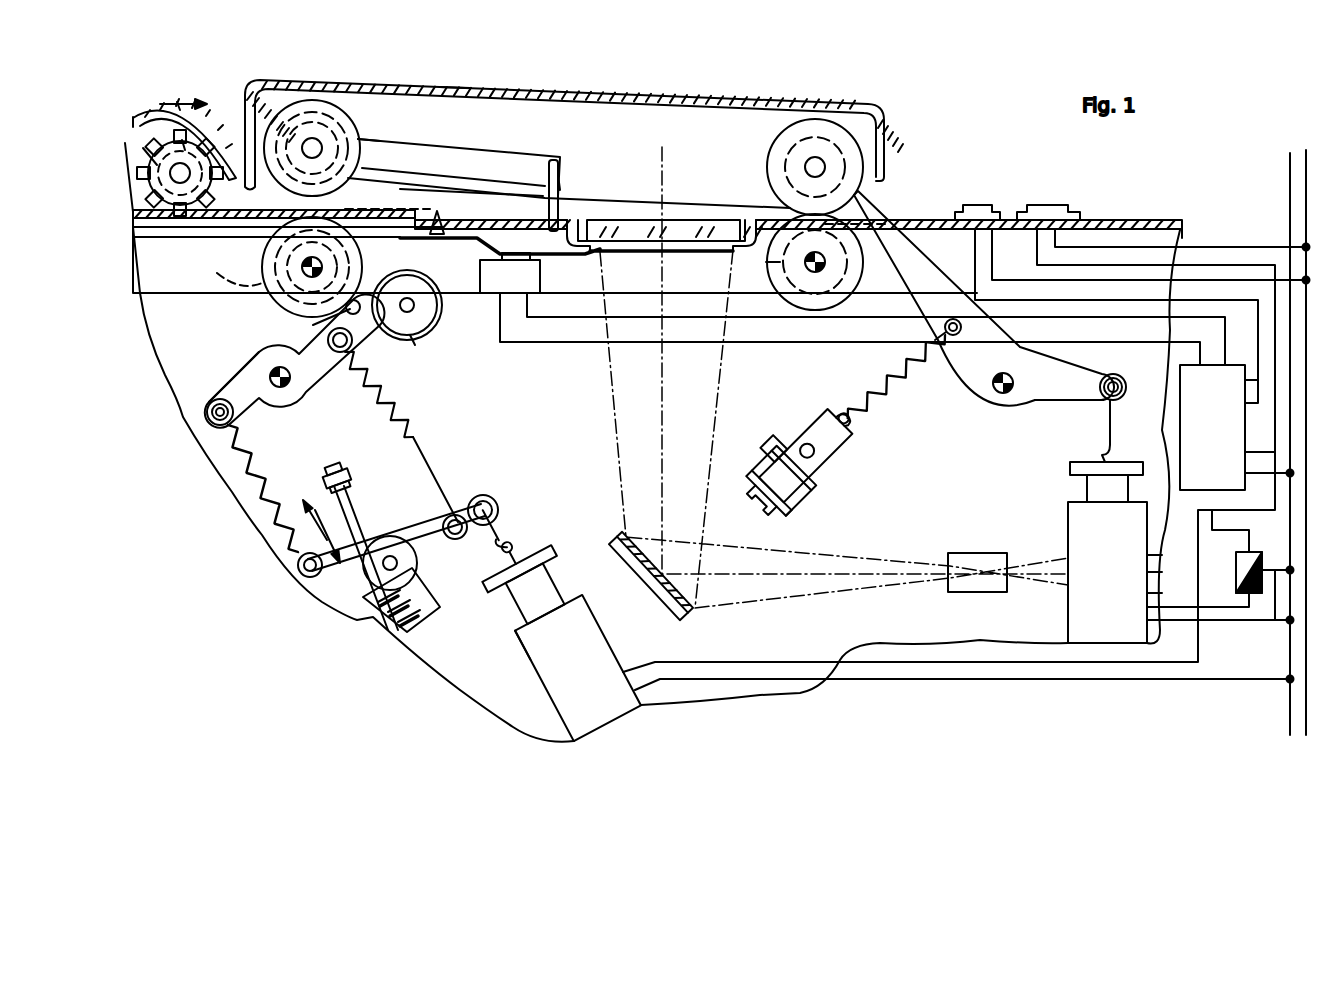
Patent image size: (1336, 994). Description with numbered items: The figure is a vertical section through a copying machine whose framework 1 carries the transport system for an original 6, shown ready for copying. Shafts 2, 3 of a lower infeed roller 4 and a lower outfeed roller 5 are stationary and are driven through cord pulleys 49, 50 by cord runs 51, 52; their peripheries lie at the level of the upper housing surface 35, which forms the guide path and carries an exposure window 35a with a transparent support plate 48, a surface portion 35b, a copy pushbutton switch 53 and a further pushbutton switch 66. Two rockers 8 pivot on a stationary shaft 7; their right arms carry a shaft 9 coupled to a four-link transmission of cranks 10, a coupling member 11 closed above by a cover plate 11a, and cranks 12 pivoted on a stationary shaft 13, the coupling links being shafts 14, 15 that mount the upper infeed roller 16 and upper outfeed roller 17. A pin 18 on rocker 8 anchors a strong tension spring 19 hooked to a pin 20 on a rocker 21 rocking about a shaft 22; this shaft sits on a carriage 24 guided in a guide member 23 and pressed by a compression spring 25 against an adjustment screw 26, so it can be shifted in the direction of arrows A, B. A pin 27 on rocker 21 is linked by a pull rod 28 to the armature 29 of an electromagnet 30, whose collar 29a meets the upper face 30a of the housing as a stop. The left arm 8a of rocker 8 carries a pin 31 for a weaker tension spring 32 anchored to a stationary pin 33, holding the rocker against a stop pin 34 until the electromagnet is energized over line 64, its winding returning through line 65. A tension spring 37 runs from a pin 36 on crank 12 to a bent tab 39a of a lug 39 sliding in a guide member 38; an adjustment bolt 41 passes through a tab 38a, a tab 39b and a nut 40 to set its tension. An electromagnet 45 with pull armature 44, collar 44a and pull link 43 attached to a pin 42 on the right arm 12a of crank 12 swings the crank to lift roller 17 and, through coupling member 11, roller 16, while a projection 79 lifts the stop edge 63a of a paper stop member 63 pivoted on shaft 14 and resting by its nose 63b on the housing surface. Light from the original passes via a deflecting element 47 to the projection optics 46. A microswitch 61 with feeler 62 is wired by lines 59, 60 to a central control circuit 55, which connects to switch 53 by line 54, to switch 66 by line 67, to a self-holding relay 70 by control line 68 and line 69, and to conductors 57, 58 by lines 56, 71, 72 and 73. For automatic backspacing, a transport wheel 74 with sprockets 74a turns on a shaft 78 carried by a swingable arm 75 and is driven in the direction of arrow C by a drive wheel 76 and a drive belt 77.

The framework 1 is at (155, 335).
The shaft 2 is at (330, 267).
The shaft 3 is at (815, 275).
The lower infeed roller 4 is at (265, 266).
The lower outfeed roller 5 is at (863, 264).
The original 6 is at (133, 226).
The stationary shaft 7 is at (272, 372).
The rocker 8 is at (318, 370).
The left arm of rocker 8a is at (245, 385).
The shaft 9 is at (415, 335).
The crank 10 is at (410, 275).
The coupling member 11 is at (583, 106).
The cover plate 11a is at (455, 92).
The crank 12 is at (925, 285).
The lever arm 12a is at (1060, 380).
The stationary shaft 13 is at (995, 392).
The shaft 14 is at (322, 148).
The shaft 15 is at (818, 157).
The upper infeed roller 16 is at (345, 122).
The upper outfeed roller 17 is at (768, 123).
The pin 18 is at (350, 343).
The tension spring 19 is at (405, 423).
The pin 20 is at (452, 520).
The rocker 21 is at (420, 540).
The shaft 22 is at (410, 563).
The guide member 23 is at (430, 595).
The carriage 24 is at (360, 500).
The compression spring 25 is at (390, 615).
The adjustment screw 26 is at (333, 470).
The pin 27 is at (483, 497).
The pull rod 28 is at (500, 555).
The armature 29 is at (548, 595).
The collar 29a is at (548, 570).
The electromagnet 30 is at (608, 660).
The upper face of housing 30a is at (515, 632).
The pin 31 is at (205, 412).
The tension spring 32 is at (255, 470).
The stationary pin 33 is at (300, 567).
The stop pin 34 is at (313, 325).
The upper housing surface 35 is at (908, 220).
The exposure window 35a is at (610, 220).
The guide strip 35b is at (487, 200).
The pin 36 is at (945, 328).
The tension spring 37 is at (905, 362).
The guide member 38 is at (816, 481).
The bent tab 38a is at (814, 519).
The lug 39 is at (794, 444).
The bent tab 39a is at (878, 408).
The bent tab 39b is at (742, 451).
The nut 40 is at (840, 451).
The adjustment bolt 41 is at (740, 497).
The pivot pin 42 is at (1118, 375).
The pull link 43 is at (1108, 416).
The pull armature 44 is at (1085, 490).
The collar 44a is at (1078, 470).
The electromagnet 45 is at (1080, 548).
The projection optics 46 is at (960, 560).
The mirror 47 is at (660, 595).
The transparent support plate 48 is at (705, 224).
The cord pulley 49 is at (235, 282).
The cord pulley 50 is at (766, 266).
The cord run 51 is at (578, 292).
The cord run 52 is at (160, 297).
The copy pushbutton switch 53 is at (976, 205).
The line 54 is at (1252, 312).
The central control circuit 55 is at (1180, 418).
The line 56 is at (1245, 262).
The conductor 57 is at (1306, 187).
The conductor 58 is at (1290, 165).
The line 59 is at (548, 342).
The line 60 is at (537, 318).
The microswitch 61 is at (483, 300).
The feeler 62 is at (443, 195).
The paper stop member 63 is at (458, 157).
The stop edge 63a is at (556, 180).
The nose 63b is at (385, 150).
The line 64 is at (1222, 662).
The line 65 is at (1285, 678).
The pushbutton switch 66 is at (1046, 207).
The line 67 is at (1265, 246).
The control line 68 is at (1237, 552).
The line 69 is at (1205, 530).
The self-holding relay 70 is at (1249, 608).
The line 71 is at (1182, 230).
The line 72 is at (1272, 585).
The line 73 is at (1246, 473).
The transport wheel 74 is at (143, 147).
The sprockets 74a is at (177, 102).
The swingable arm 75 is at (182, 140).
The drive wheel 76 is at (228, 165).
The drive belt 77 is at (133, 117).
The mounting shaft 78 is at (192, 180).
The projection 79 is at (553, 160).
The arrow A is at (307, 509).
The arrow B is at (335, 550).
The direction C is at (191, 102).